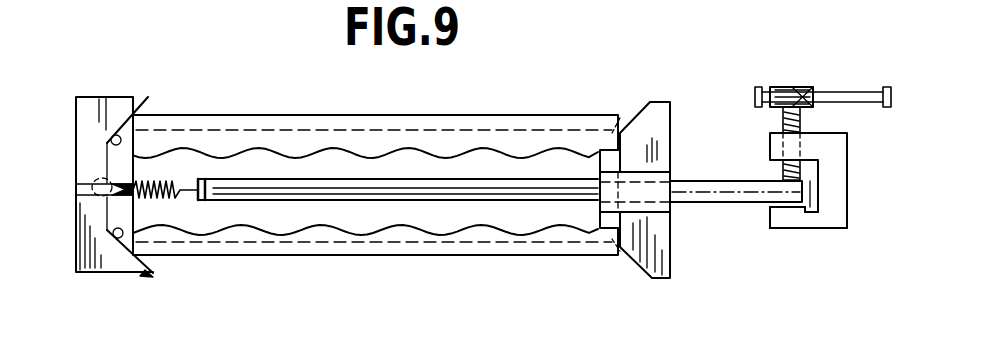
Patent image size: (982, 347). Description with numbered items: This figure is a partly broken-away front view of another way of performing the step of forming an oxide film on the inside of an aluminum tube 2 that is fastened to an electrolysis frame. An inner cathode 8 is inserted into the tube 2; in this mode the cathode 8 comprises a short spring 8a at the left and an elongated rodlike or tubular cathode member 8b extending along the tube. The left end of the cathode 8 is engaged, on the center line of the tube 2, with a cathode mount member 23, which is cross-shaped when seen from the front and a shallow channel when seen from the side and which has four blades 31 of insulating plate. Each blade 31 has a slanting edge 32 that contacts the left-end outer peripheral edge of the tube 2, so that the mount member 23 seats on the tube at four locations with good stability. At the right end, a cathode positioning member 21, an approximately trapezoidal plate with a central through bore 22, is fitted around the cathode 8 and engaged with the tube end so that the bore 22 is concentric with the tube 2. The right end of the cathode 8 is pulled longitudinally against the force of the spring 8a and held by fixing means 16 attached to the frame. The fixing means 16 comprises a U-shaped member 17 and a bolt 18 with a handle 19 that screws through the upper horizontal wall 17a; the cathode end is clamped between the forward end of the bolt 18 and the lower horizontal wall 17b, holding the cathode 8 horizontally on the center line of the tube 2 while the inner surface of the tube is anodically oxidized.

The aluminum tube 2 is at (288, 126).
The inner cathode 8 is at (241, 182).
The spring 8a is at (182, 177).
The cathode member 8b is at (522, 193).
The fixing means 16 is at (833, 164).
The U-shaped member 17 is at (835, 219).
The upper horizontal wall 17a is at (770, 149).
The lower horizontal wall 17b is at (793, 223).
The bolt 18 is at (788, 87).
The handle 19 is at (848, 92).
The cathode positioning member 21 is at (652, 123).
The central through bore 22 is at (660, 174).
The cathode mount member 23 is at (117, 97).
The blades 31 is at (135, 97).
The slanting edge 32 is at (106, 143).